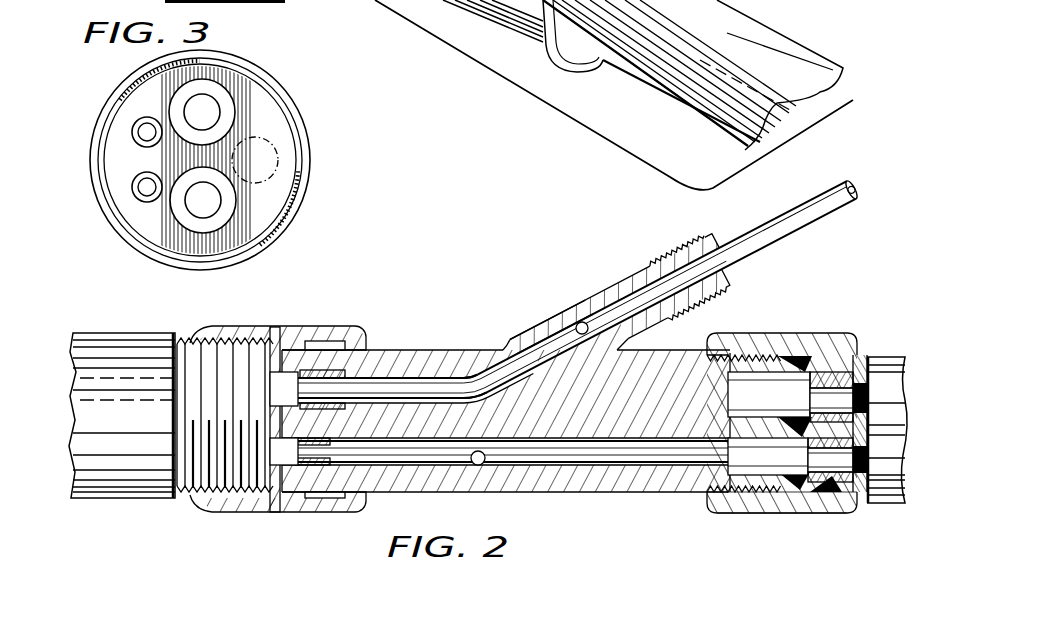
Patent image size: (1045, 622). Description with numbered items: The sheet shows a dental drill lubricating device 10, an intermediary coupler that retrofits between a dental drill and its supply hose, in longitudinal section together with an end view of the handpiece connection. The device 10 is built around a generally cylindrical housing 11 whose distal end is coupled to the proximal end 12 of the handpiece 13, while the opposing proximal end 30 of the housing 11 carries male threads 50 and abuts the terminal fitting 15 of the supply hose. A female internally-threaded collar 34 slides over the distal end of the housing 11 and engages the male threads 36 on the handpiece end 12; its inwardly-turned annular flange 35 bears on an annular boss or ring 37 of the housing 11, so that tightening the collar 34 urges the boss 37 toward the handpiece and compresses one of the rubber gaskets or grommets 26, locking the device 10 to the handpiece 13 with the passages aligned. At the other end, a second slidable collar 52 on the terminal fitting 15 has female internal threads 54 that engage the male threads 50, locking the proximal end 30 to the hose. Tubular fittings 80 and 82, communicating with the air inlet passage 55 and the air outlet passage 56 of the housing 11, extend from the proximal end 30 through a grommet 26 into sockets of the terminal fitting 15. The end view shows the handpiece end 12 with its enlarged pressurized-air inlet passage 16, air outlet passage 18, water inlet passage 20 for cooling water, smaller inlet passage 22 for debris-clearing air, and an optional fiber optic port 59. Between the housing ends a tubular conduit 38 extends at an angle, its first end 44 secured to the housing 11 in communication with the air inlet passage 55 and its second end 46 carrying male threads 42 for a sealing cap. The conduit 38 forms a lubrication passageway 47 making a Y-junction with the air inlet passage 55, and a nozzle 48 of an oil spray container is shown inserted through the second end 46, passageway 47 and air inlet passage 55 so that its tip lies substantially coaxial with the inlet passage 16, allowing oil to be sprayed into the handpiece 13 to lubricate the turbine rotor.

In FIG. 2, the dental drill lubricating device 10 is at (619, 514).
In FIG. 2, the housing 11 is at (454, 350).
In FIG. 2, the proximal end of handpiece 12 is at (183, 508).
In FIG. 2, the handpiece 13 is at (112, 335).
In FIG. 2, the terminal fitting 15 is at (890, 352).
In FIG. 3, the pressurized-air inlet passage 16 is at (212, 108).
In FIG. 3, the air outlet passage 18 is at (228, 213).
In FIG. 3, the water inlet passage 20 is at (140, 137).
In FIG. 3, the smaller inlet passage 22 is at (147, 197).
In FIG. 2, the gaskets or grommets 26 is at (282, 505).
In FIG. 2, the proximal end of housing 30 is at (697, 510).
In FIG. 2, the collar 34 is at (277, 330).
In FIG. 2, the annular flange 35 is at (345, 500).
In FIG. 2, the male threads 36 is at (187, 340).
In FIG. 2, the annular boss or ring 37 is at (318, 347).
In FIG. 2, the tubular conduit 38 is at (552, 328).
In FIG. 2, the male threads 42 is at (650, 268).
In FIG. 2, the first end of conduit 44 is at (506, 366).
In FIG. 2, the second end of conduit 46 is at (702, 248).
In FIG. 2, the lubrication passageway 47 is at (582, 322).
In FIG. 2, the nozzle 48 is at (786, 240).
In FIG. 2, the male threads 50 is at (743, 500).
In FIG. 2, the second slidable collar 52 is at (766, 345).
In FIG. 2, the female internal threads 54 is at (710, 357).
In FIG. 2, the air inlet passage 55 is at (405, 376).
In FIG. 2, the air outlet passage 56 is at (478, 466).
In FIG. 3, the fiber optic port or passage 59 is at (263, 150).
In FIG. 2, the tubular fitting 80 is at (843, 372).
In FIG. 2, the tubular fitting 82 is at (832, 500).